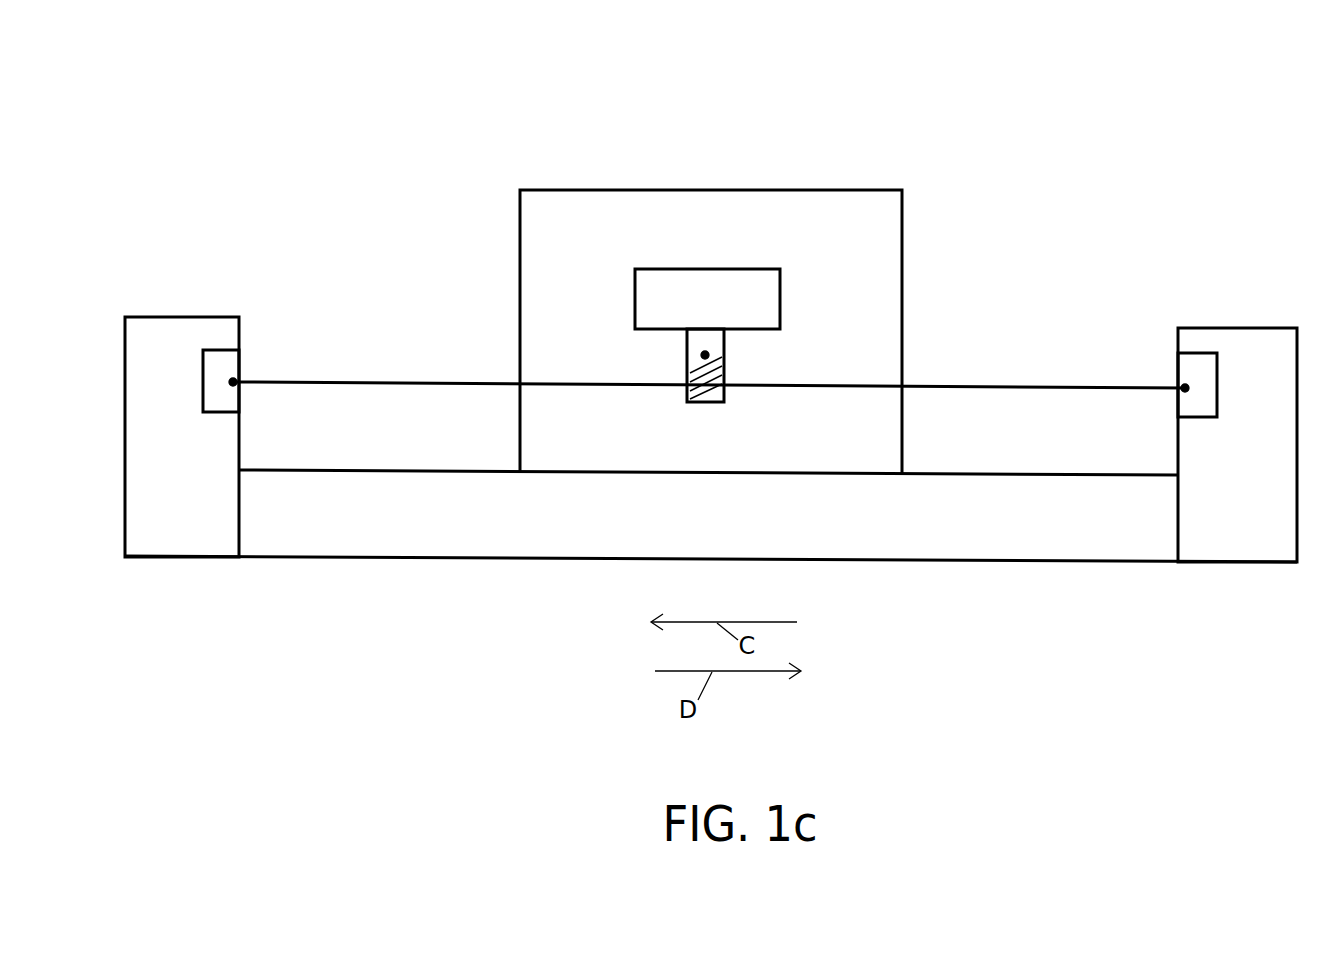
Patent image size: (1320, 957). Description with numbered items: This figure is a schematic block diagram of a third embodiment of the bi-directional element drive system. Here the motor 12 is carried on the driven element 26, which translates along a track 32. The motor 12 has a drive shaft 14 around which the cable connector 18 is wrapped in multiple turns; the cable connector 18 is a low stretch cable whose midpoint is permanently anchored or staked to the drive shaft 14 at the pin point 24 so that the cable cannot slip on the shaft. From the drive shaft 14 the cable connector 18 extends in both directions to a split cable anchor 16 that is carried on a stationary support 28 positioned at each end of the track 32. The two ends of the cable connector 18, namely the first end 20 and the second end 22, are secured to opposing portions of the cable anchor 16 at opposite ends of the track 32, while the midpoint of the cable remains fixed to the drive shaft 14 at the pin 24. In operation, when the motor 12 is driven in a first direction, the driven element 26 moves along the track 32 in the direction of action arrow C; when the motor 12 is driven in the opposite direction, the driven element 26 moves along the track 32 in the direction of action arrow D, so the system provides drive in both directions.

The motor 12 is at (707, 269).
The drive shaft 14 is at (705, 402).
The cable anchor 16 is at (222, 348).
The cable connector 18 is at (967, 386).
The first end 20 is at (238, 378).
The second end 22 is at (1181, 386).
The pin point 24 is at (701, 354).
The driven element 26 is at (907, 272).
The stationary support 28 is at (153, 333).
The track 32 is at (1002, 540).